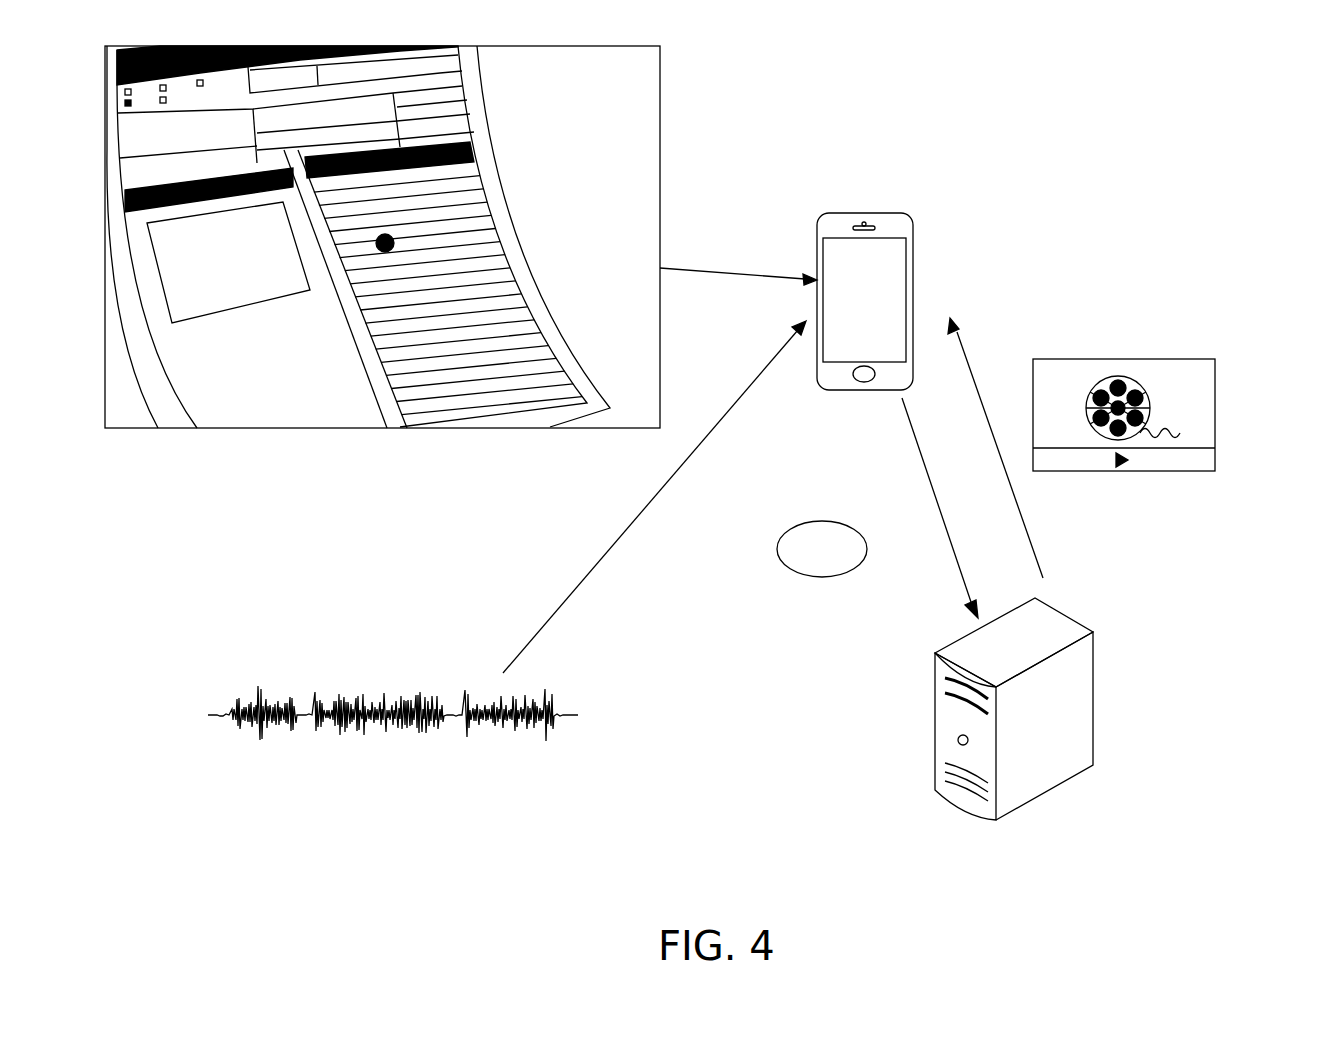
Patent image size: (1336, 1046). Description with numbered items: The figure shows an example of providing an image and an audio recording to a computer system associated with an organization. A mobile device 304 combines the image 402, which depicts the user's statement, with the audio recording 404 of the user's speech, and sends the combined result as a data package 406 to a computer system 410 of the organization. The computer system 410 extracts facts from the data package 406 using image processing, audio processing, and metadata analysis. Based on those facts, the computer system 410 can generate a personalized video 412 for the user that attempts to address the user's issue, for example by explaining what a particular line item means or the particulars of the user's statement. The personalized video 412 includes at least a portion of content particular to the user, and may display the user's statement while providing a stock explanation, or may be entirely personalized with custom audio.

The image 402 is at (660, 97).
The mobile device 304 is at (913, 250).
The audio recording 404 is at (358, 677).
The data package 406 is at (825, 522).
The computer system 410 is at (1093, 675).
The personalized video 412 is at (1215, 388).